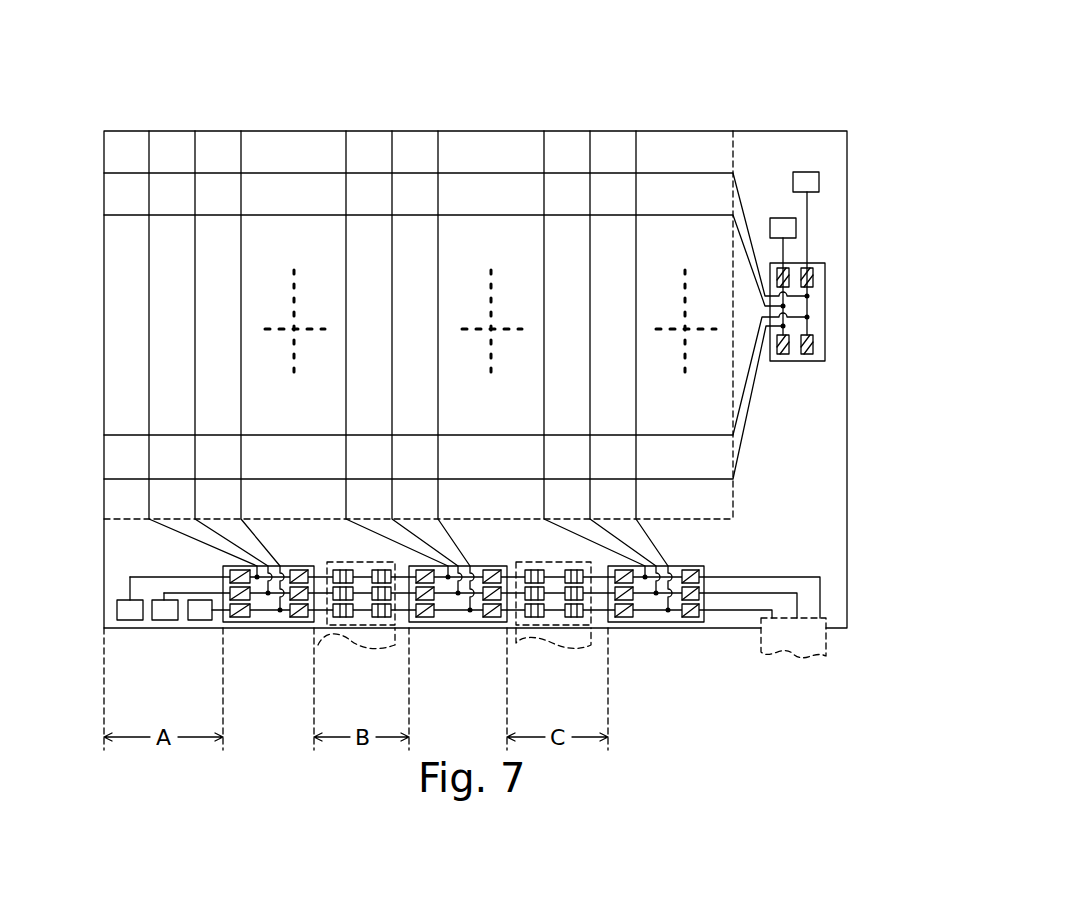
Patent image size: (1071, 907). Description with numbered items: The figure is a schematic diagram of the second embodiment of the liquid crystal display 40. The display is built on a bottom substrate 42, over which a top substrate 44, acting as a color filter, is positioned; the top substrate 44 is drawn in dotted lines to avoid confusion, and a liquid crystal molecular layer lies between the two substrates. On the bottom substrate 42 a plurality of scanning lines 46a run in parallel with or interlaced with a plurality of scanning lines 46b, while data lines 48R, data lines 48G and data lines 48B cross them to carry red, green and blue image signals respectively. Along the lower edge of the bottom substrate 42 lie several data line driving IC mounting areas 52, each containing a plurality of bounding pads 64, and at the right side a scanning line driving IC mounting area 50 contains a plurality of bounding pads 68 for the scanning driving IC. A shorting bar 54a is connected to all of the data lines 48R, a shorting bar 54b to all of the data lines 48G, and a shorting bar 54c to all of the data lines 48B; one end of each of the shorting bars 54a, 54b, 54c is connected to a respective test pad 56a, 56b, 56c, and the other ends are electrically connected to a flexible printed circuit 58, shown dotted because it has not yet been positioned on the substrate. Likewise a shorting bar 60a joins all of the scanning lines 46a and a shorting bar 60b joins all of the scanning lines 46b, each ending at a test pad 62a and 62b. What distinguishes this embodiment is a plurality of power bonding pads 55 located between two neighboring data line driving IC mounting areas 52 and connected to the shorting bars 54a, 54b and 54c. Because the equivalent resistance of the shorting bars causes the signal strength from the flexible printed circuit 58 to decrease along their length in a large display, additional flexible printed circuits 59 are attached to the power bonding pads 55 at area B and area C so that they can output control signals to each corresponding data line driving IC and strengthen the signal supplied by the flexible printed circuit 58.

The liquid crystal display 40 is at (826, 58).
The bottom substrate 42 is at (815, 131).
The top substrate 44 is at (733, 152).
The scanning lines 46a is at (118, 216).
The scanning lines 46b is at (118, 174).
The data lines 48R is at (149, 149).
The data lines 48G is at (195, 149).
The data lines 48B is at (241, 149).
The scanning line driving IC mounting area 50 is at (826, 313).
The data line driving IC mounting area 52 is at (292, 622).
The shorting bar 54a is at (321, 578).
The shorting bar 54b is at (320, 596).
The shorting bar 54c is at (402, 612).
The power bonding pads 55 is at (341, 562).
The test pad 56a is at (128, 612).
The test pad 56b is at (158, 617).
The test pad 56c is at (197, 610).
The flexible printed circuit 58 is at (792, 648).
The flexible printed circuits 59 is at (345, 645).
The shorting bar 60a is at (783, 250).
The shorting bar 60b is at (807, 207).
The test pad 62a is at (783, 229).
The test pad 62b is at (810, 184).
The bounding pads 64 is at (243, 615).
The bounding pads 68 is at (808, 345).